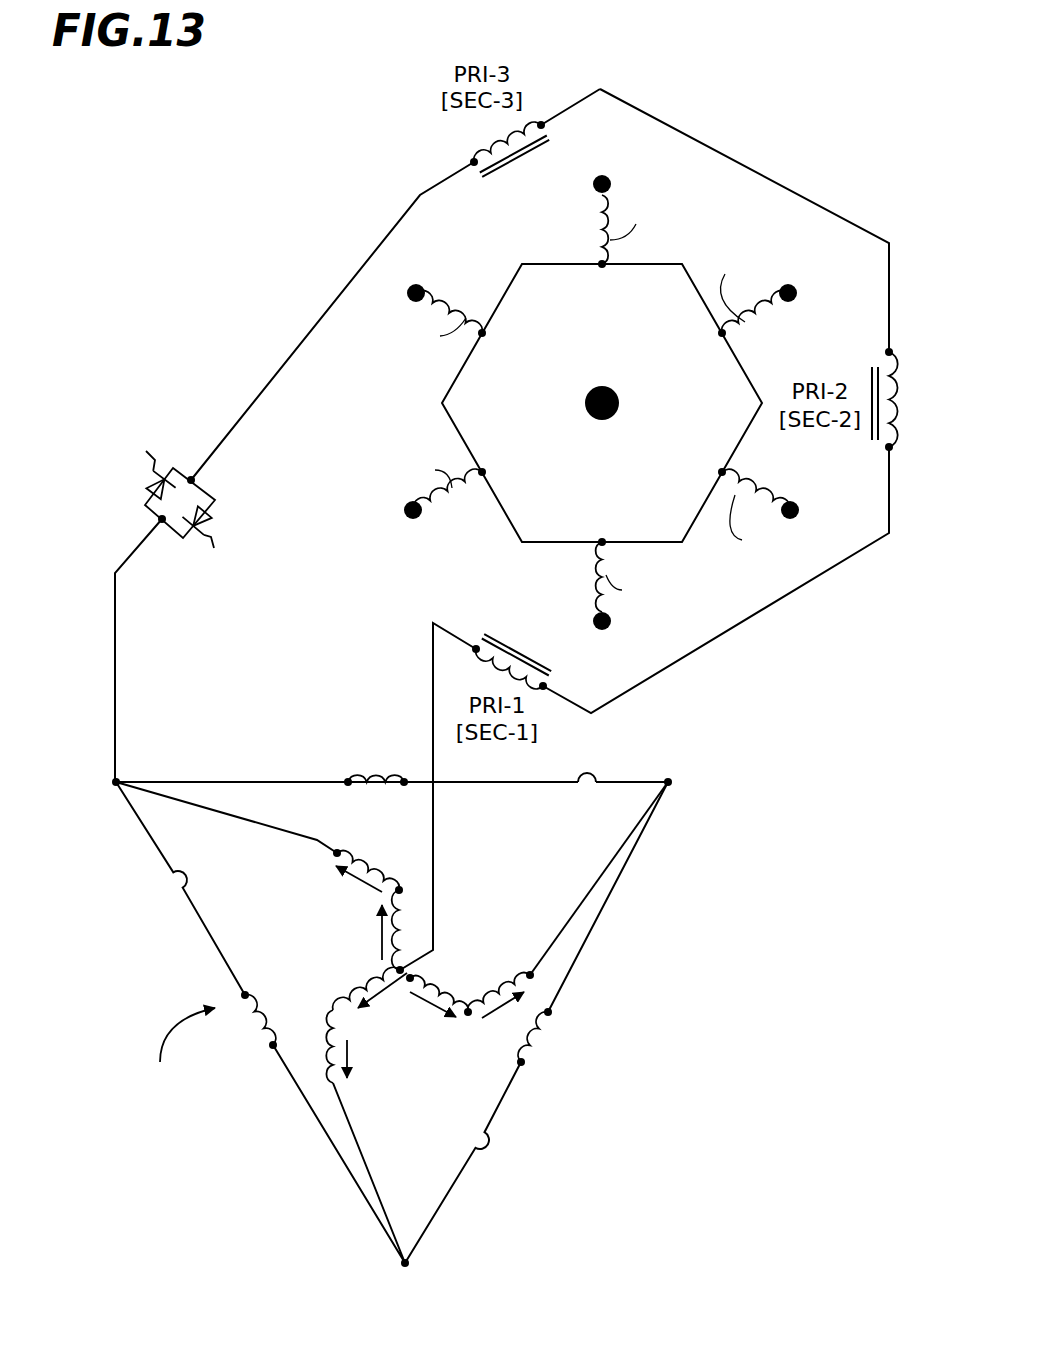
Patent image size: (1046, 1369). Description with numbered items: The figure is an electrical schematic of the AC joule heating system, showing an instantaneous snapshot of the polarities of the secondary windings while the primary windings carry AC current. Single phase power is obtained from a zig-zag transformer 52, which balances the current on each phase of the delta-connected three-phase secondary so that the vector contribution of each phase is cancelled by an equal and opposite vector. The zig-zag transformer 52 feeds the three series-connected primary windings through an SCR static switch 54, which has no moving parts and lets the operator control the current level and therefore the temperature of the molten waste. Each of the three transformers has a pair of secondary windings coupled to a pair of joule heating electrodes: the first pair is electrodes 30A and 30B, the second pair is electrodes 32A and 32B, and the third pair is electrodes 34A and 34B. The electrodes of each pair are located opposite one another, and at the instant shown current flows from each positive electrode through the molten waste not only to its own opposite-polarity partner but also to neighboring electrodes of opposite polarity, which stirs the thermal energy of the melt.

The AC joule heating electrode 30A is at (794, 502).
The AC joule heating electrode 30B is at (420, 285).
The AC joule heating electrode 32A is at (606, 176).
The AC joule heating electrode 32B is at (606, 629).
The AC joule heating electrode 34A is at (412, 519).
The AC joule heating electrode 34B is at (794, 300).
The zig-zag transformer 52 is at (686, 782).
The SCR static switch 54 is at (178, 548).